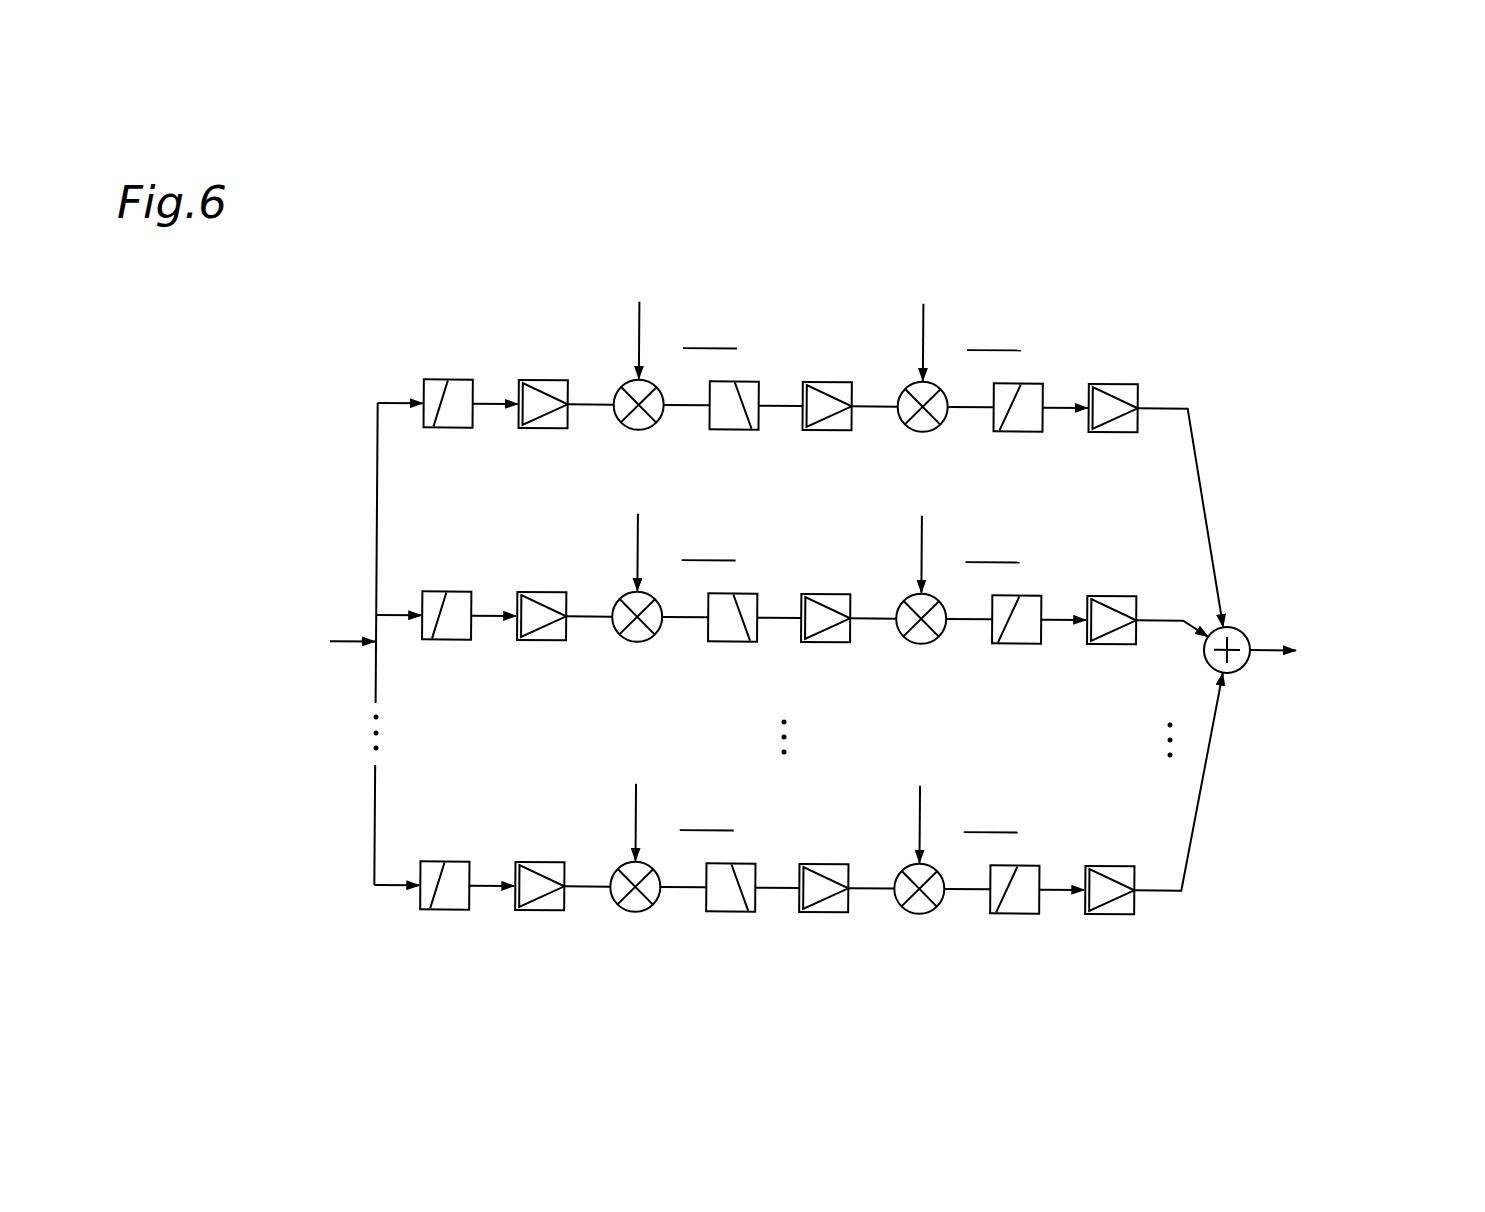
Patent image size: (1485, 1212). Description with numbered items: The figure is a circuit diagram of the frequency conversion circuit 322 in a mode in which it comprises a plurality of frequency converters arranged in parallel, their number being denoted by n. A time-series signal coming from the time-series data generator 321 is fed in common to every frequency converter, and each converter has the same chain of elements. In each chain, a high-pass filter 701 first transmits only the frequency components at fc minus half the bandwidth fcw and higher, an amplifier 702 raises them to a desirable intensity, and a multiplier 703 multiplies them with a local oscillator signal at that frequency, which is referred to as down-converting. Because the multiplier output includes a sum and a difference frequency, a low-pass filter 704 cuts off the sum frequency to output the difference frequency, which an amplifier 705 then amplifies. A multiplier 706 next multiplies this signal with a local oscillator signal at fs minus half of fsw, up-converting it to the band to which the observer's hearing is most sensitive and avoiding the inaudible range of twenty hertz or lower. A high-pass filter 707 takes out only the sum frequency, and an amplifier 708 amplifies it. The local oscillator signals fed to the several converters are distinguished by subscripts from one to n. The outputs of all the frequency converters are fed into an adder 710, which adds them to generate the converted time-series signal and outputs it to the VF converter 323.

The frequency conversion circuit 322 is at (1181, 331).
The time-series data generator 321 is at (250, 641).
The VF converter 323 is at (1377, 650).
The high-pass filter 701 is at (446, 670).
The amplifier 702 is at (541, 671).
The multiplier 703 is at (637, 672).
The low-pass filter 704 is at (732, 672).
The amplifier 705 is at (825, 673).
The multiplier 706 is at (921, 674).
The high-pass filter 707 is at (1016, 674).
The amplifier 708 is at (1111, 675).
The adder 710 is at (1240, 663).